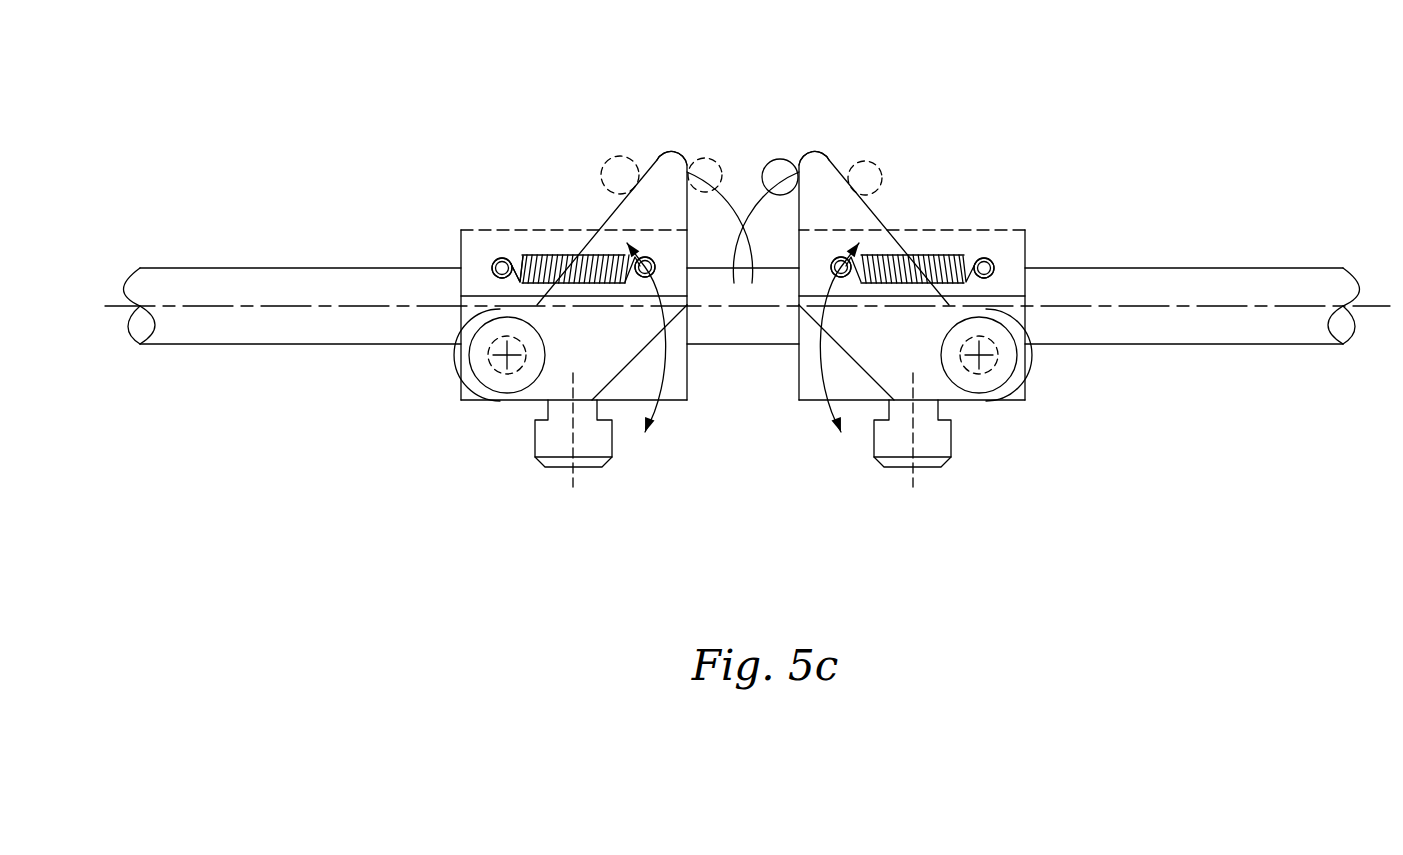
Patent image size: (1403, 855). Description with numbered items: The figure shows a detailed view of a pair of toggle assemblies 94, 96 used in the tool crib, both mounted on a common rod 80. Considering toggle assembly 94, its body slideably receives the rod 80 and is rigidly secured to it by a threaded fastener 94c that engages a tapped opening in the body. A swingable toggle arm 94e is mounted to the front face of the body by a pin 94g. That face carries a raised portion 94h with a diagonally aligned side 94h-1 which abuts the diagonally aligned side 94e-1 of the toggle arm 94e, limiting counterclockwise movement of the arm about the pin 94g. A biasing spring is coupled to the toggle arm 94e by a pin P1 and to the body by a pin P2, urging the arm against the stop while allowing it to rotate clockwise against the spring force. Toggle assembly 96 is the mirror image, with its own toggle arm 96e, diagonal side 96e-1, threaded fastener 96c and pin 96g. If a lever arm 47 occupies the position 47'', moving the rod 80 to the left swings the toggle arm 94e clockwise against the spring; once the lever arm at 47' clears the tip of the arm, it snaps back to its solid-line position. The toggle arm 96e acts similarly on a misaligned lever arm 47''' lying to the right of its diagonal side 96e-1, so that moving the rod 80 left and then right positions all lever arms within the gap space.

The rod 80 is at (183, 268).
The toggle assembly 94 is at (428, 153).
The toggle assembly 96 is at (1019, 153).
The toggle arm 94e is at (678, 150).
The toggle arm 96e is at (801, 160).
The diagonally aligned side 94e-1 is at (652, 150).
The diagonal side 96e-1 is at (822, 160).
The raised portion 94h is at (509, 245).
The diagonally aligned side 94h-1 is at (590, 246).
The threaded fastener 94c is at (542, 445).
The threaded fastener 96c is at (934, 436).
The pin 94g is at (507, 355).
The pin 96g is at (985, 355).
The lever arm 47 is at (775, 118).
The lever arm 47' is at (717, 135).
The lever arm 47'' is at (603, 140).
The lever arm 47''' is at (912, 155).
The pin P1 is at (645, 257).
The pin P2 is at (502, 262).